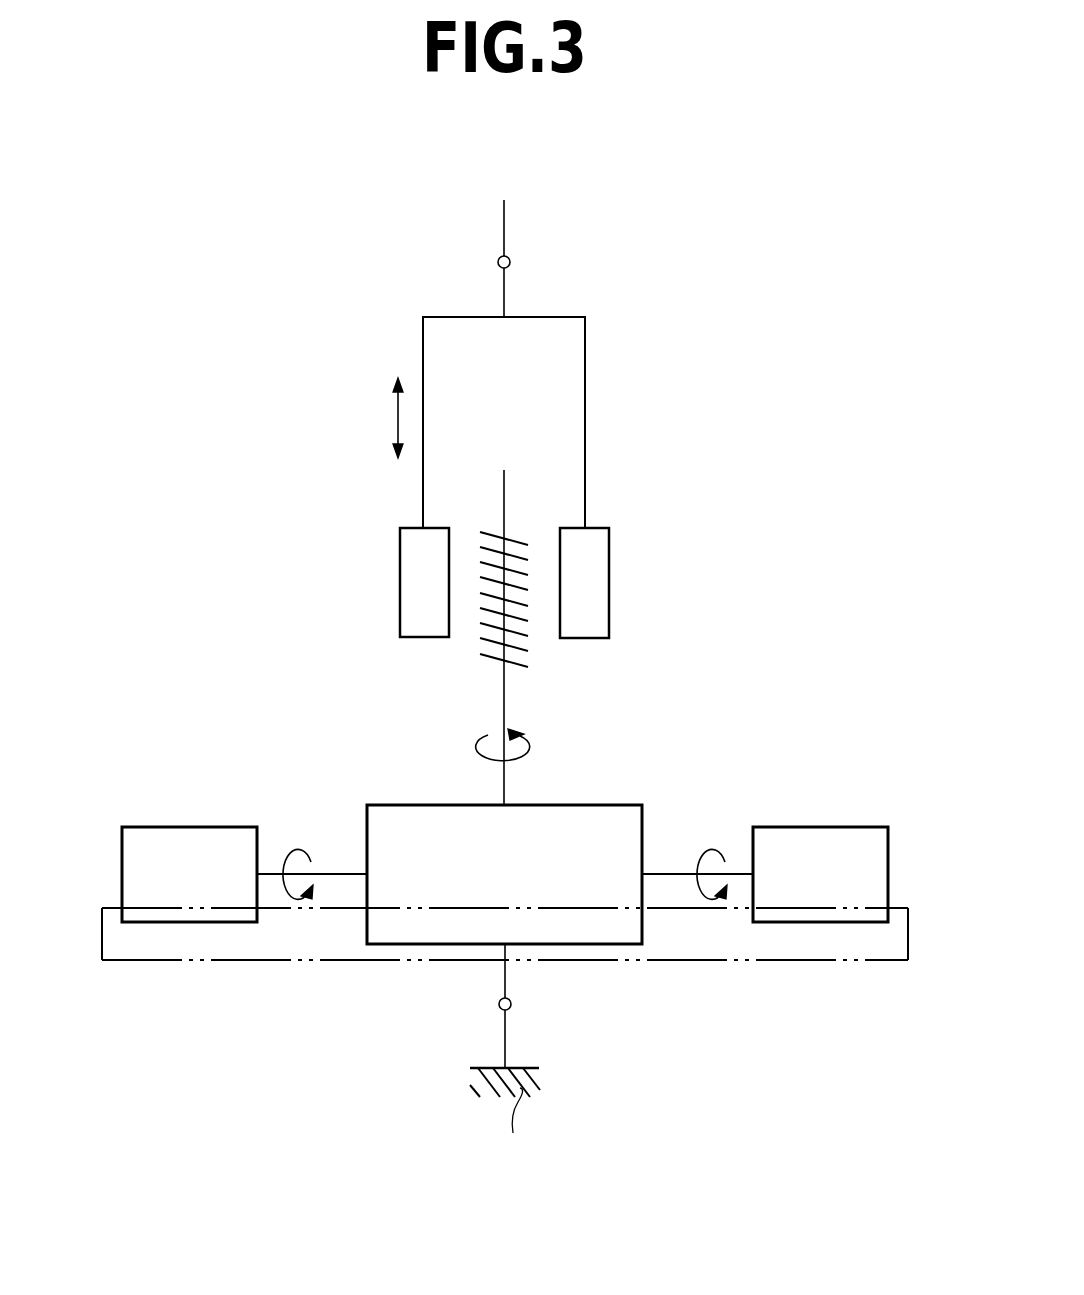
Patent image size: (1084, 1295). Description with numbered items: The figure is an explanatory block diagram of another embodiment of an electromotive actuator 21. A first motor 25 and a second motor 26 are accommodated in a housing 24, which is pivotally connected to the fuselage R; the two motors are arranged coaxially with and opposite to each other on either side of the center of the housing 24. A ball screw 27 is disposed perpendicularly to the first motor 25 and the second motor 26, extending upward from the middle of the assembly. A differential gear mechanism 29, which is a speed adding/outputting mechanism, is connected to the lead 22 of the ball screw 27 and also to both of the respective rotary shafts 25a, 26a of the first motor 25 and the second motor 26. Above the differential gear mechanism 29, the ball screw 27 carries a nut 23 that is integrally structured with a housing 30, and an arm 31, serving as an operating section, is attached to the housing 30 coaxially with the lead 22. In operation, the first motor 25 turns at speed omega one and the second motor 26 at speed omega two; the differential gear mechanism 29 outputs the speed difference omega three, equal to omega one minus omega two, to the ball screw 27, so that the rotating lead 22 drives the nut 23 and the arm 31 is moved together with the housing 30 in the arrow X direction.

The electromotive actuator 21 is at (708, 603).
The lead 22 is at (504, 695).
The nut 23 is at (609, 568).
The housing 24 is at (417, 960).
The first motor 25 is at (188, 826).
The rotary shaft 25a is at (345, 873).
The second motor 26 is at (815, 826).
The rotary shaft 26a is at (662, 873).
The ball screw 27 is at (358, 522).
The differential gear mechanism 29 is at (585, 804).
The housing 30 is at (585, 393).
The arm 31 is at (504, 290).